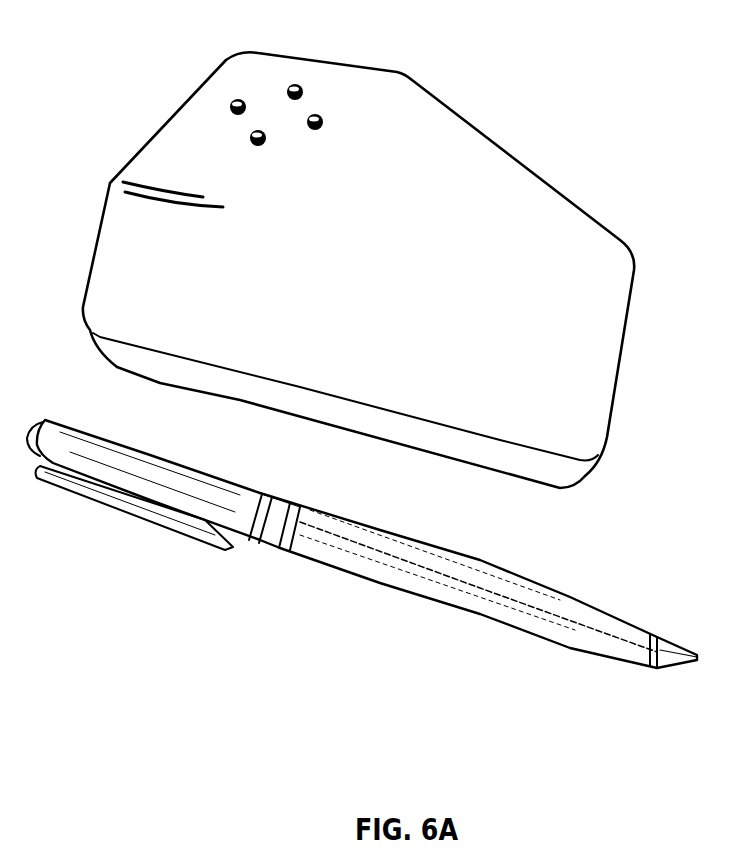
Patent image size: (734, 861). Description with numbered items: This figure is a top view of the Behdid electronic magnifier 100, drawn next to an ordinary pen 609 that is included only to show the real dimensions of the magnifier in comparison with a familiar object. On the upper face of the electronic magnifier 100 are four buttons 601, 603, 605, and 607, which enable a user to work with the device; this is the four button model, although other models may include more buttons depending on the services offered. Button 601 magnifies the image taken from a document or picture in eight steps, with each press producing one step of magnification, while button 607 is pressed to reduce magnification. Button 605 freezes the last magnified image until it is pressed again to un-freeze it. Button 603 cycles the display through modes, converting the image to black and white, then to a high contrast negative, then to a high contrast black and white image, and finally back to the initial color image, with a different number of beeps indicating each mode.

The Behdid electronic magnifier 100 is at (547, 230).
The button 601 is at (230, 100).
The button 603 is at (257, 148).
The button 605 is at (298, 83).
The button 607 is at (327, 135).
The pen 609 is at (573, 605).